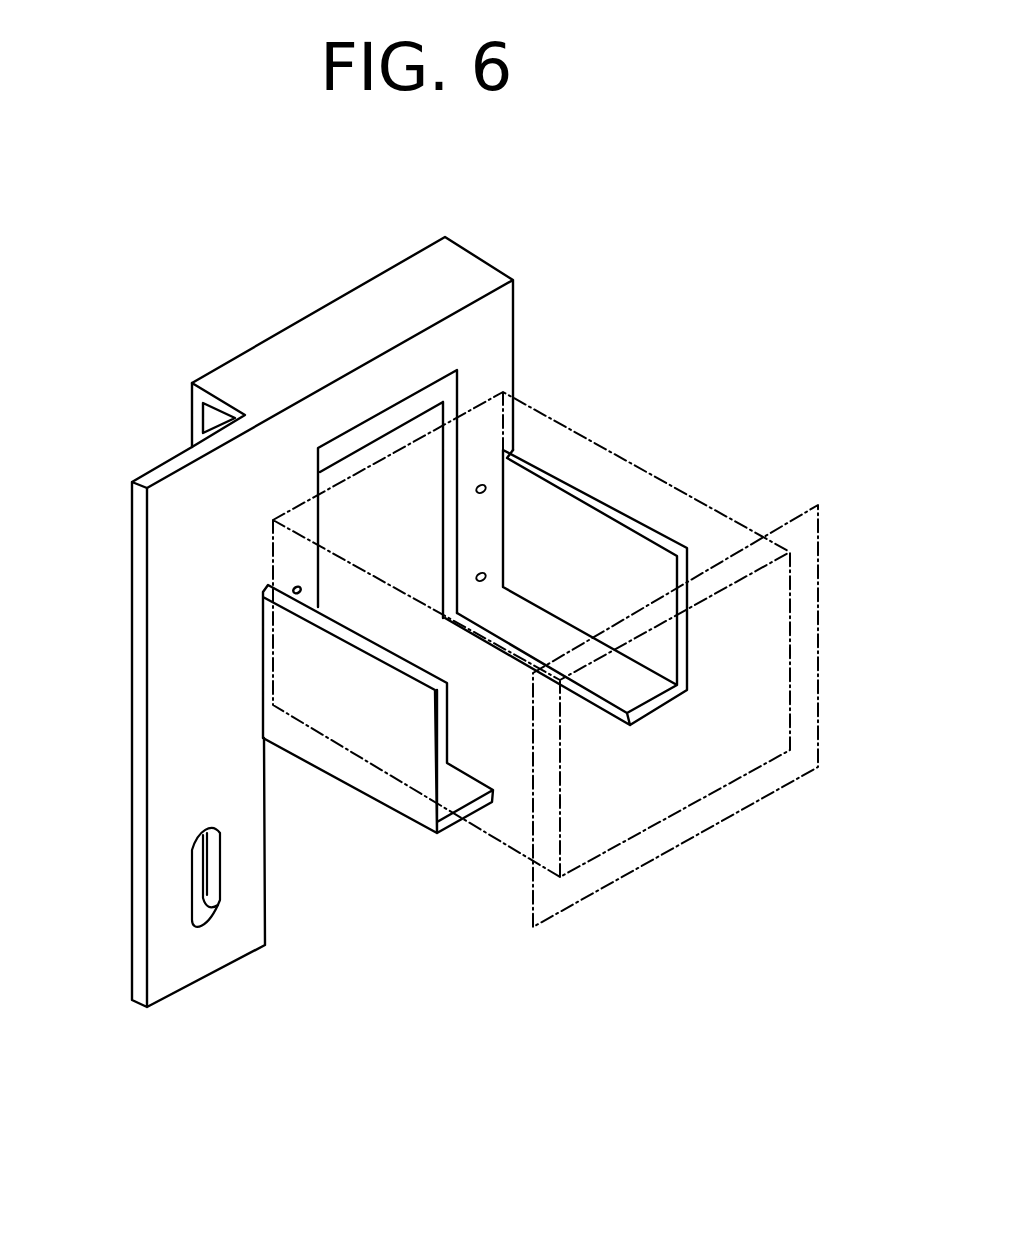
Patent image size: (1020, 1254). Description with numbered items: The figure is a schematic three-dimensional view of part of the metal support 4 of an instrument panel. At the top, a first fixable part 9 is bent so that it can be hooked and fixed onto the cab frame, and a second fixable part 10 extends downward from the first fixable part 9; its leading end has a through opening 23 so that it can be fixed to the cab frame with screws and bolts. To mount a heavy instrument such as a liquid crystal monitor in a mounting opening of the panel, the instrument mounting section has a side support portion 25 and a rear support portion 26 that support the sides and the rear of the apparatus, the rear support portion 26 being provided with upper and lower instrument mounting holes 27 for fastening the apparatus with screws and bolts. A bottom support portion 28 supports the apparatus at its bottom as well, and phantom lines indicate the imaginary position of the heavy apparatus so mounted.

The metal support 4 is at (475, 264).
The first fixable part 9 is at (192, 428).
The second fixable part 10 is at (140, 952).
The through opening 23 is at (202, 897).
The side support portion 25 is at (625, 550).
The rear support portion 26 is at (463, 532).
The instrument mounting hole 27 is at (486, 577).
The bottom support portion 28 is at (455, 785).